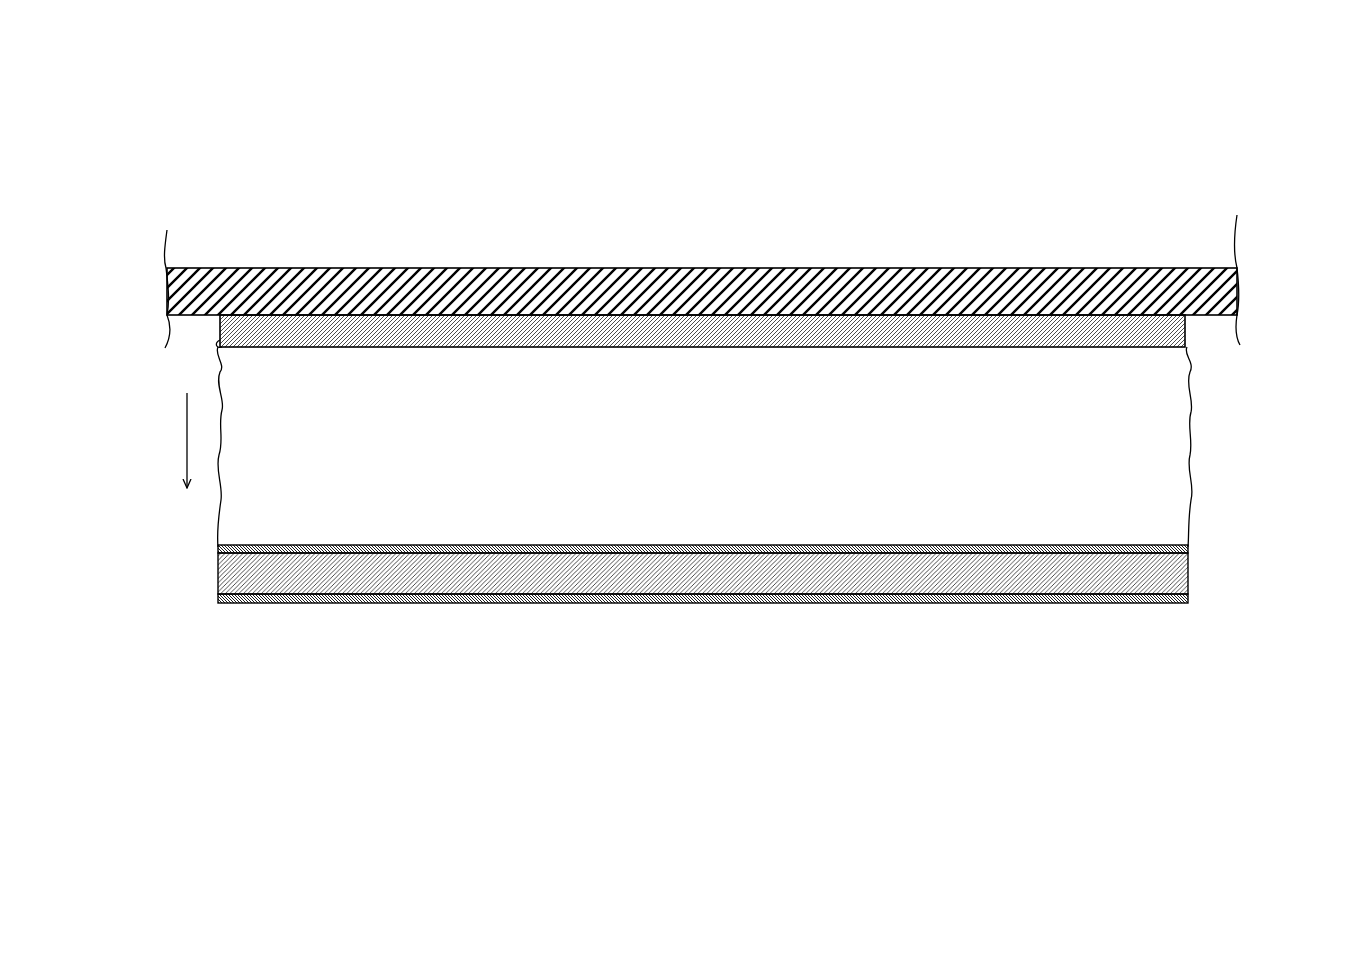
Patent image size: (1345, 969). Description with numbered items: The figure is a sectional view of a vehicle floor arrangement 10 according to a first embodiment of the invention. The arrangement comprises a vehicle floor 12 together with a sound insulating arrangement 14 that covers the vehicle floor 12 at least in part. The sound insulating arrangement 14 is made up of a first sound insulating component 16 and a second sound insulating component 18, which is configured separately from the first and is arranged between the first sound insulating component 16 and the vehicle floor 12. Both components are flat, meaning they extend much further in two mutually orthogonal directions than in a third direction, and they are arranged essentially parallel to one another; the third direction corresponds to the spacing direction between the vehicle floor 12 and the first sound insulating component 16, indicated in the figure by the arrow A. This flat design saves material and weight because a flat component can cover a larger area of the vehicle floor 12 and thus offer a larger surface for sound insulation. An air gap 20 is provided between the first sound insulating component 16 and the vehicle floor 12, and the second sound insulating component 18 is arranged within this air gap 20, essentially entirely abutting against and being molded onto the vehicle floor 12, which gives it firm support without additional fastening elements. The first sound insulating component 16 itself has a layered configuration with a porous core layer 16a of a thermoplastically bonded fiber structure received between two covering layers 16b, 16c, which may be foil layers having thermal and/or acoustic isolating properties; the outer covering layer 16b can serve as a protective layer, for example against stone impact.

The vehicle floor arrangement 10 is at (1247, 98).
The vehicle floor 12 is at (1163, 268).
The sound insulating arrangement 14 is at (773, 447).
The first sound insulating component 16 is at (688, 589).
The porous core layer 16a is at (218, 572).
The covering layer 16b is at (218, 602).
The covering layer 16c is at (218, 547).
The second sound insulating component 18 is at (1190, 337).
The air gap 20 is at (1198, 447).